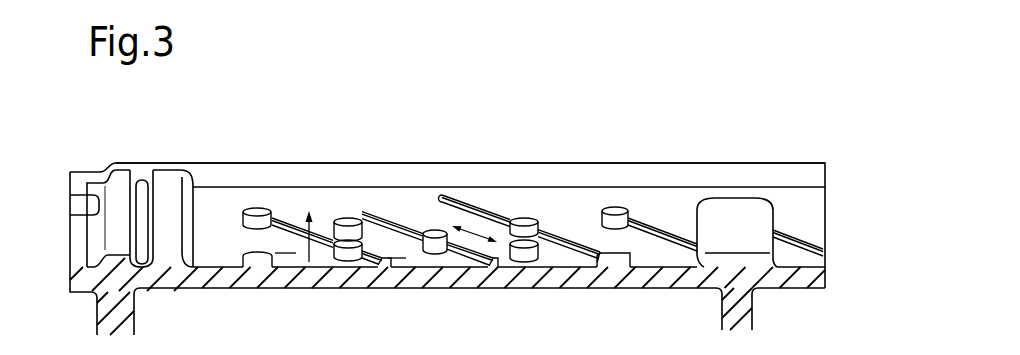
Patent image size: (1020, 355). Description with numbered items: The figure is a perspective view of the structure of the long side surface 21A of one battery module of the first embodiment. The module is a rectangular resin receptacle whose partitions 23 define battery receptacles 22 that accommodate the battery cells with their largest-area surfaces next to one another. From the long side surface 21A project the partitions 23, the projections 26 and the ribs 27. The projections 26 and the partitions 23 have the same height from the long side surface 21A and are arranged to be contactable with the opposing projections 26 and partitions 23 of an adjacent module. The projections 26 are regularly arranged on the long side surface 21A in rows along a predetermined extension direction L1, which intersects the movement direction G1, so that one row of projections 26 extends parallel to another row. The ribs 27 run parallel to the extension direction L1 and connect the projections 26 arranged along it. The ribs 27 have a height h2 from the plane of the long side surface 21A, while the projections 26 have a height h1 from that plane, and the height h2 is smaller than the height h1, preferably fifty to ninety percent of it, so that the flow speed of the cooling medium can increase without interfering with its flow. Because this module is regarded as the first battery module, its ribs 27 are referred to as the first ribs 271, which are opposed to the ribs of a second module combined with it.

The long side surface 21A is at (222, 194).
The battery receptacle 22 is at (563, 200).
The partition 23 is at (737, 212).
The projection 26 is at (352, 216).
The rib 27 is at (542, 186).
The first rib 271 is at (292, 228).
The height of the projections h1 is at (287, 240).
The height of the ribs h2 is at (398, 240).
The movement direction G1 is at (310, 260).
The extension direction L1 is at (474, 238).